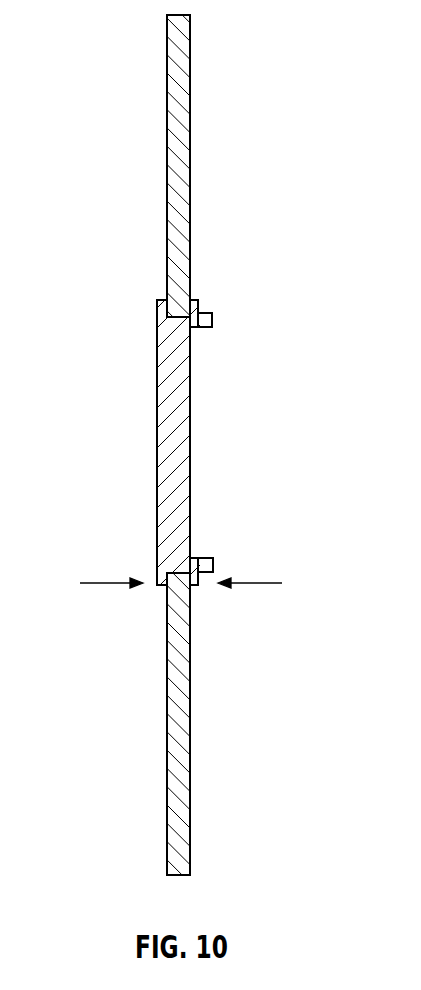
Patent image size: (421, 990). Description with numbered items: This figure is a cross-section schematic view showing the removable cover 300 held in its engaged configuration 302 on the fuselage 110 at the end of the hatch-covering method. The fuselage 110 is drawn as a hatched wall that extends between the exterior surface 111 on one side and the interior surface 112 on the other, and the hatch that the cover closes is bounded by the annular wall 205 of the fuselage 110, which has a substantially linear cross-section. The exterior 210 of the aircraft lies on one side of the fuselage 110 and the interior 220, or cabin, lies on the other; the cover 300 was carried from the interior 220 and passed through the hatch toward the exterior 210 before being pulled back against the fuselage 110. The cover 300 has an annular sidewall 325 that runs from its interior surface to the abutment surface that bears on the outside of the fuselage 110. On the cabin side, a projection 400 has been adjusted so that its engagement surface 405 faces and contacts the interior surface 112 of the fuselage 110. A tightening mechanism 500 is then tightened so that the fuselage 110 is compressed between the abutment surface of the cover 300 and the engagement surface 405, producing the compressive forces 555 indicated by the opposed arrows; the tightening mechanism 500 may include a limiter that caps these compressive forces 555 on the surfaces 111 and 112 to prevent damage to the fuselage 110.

The fuselage 110 is at (170, 28).
The exterior surface 111 is at (168, 90).
The interior surface 112 is at (192, 130).
The removable cover 300 is at (172, 442).
The engagement surface 405 is at (165, 298).
The engaged configuration 302 is at (139, 302).
The projection 400 is at (198, 305).
The tightening mechanism 500 is at (212, 320).
The annular sidewall 325 is at (178, 578).
The annular wall 205 is at (172, 575).
The compressive forces 555 is at (102, 583).
The exterior 210 is at (152, 795).
The interior 220 is at (247, 795).